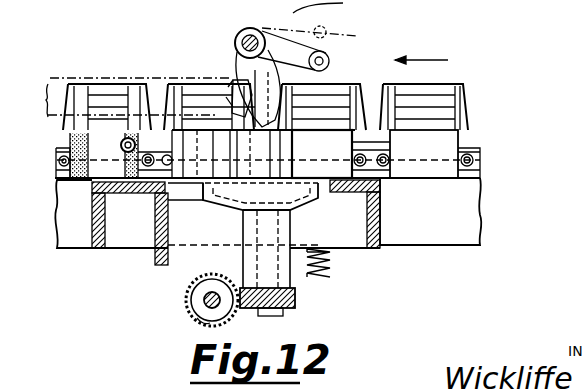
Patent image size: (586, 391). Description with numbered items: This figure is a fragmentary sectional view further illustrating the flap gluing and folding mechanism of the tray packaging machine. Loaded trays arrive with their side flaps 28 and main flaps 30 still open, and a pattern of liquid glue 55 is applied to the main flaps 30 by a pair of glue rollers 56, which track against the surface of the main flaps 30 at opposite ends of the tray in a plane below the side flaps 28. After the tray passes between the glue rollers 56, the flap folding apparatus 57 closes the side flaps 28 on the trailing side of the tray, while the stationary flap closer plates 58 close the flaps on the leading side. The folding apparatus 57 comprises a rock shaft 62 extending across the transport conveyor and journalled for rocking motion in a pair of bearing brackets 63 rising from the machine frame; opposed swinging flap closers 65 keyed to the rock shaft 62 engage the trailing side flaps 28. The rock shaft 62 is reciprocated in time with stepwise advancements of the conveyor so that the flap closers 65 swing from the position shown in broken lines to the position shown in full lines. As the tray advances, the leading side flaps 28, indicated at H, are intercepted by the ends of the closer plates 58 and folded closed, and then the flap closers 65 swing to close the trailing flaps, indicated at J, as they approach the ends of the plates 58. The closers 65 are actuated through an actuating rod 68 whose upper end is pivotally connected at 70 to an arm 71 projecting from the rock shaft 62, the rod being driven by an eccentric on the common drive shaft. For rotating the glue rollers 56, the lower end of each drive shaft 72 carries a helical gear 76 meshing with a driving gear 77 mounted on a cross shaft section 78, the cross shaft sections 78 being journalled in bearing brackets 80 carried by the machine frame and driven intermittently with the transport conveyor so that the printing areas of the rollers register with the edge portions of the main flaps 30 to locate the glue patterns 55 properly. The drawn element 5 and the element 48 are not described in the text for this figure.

The conveyor chain rail 5 is at (468, 108).
The side flaps 28 is at (80, 95).
The main flaps 30 is at (103, 168).
The pressure pad 48 is at (442, 88).
The liquid glue pattern 55 is at (62, 184).
The glue rollers 56 is at (300, 148).
The flap folding apparatus 57 is at (236, 35).
The stationary flap closer plates 58 is at (114, 76).
The rock shaft 62 is at (258, 22).
The bearing brackets 63 is at (240, 66).
The swinging flap closers 65 is at (250, 80).
The actuating rod 68 is at (330, 272).
The pivotal connection 70 is at (330, 62).
The arm 71 is at (352, 36).
The drive shaft 72 is at (268, 318).
The helical gear 76 is at (296, 293).
The driving gear 77 is at (204, 325).
The cross shaft sections 78 is at (204, 300).
The bearing brackets 80 is at (186, 303).
The leading side flap position H is at (182, 97).
The trailing side flap position J is at (218, 91).